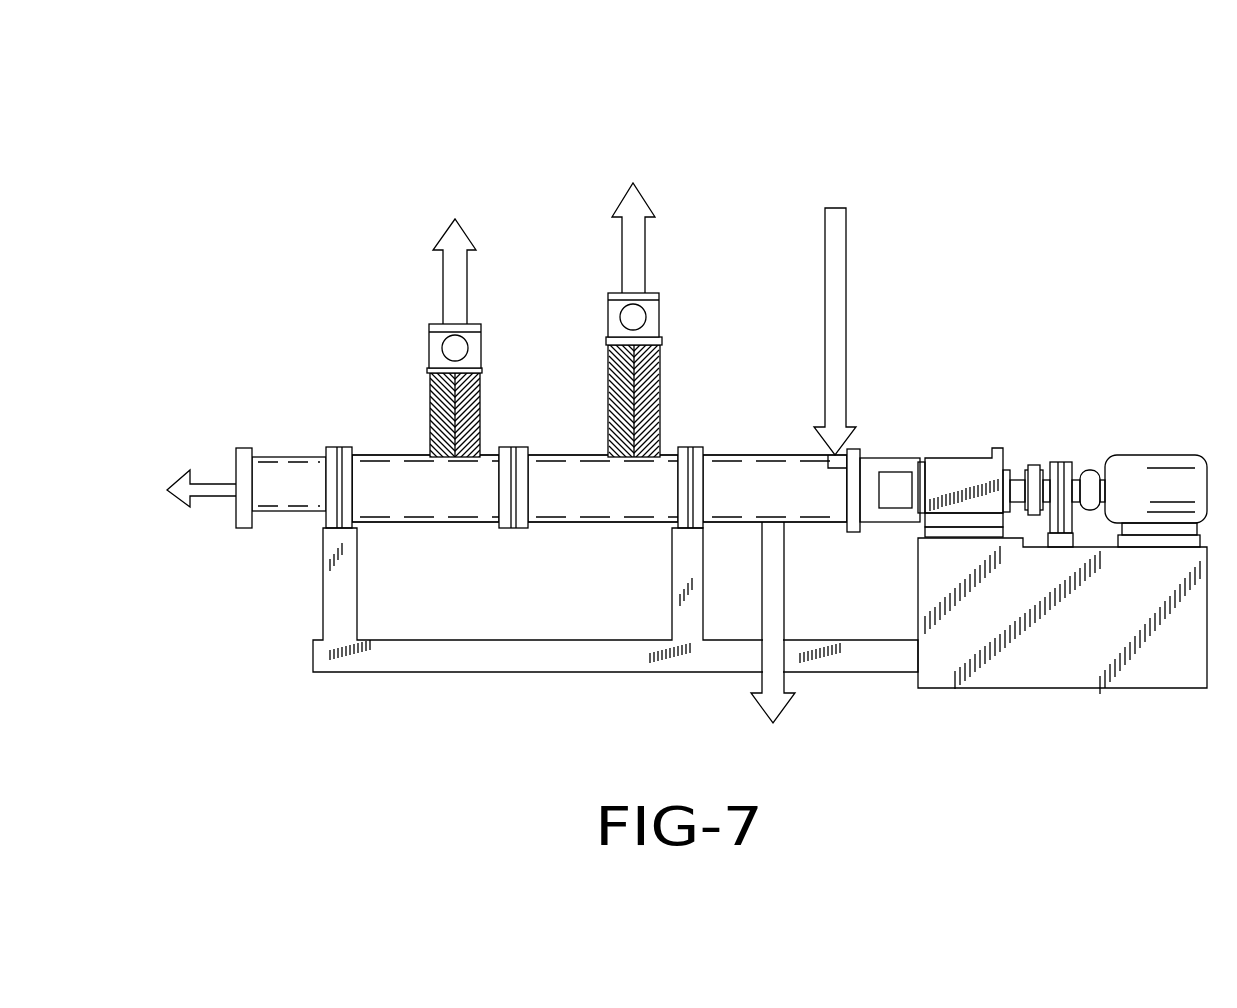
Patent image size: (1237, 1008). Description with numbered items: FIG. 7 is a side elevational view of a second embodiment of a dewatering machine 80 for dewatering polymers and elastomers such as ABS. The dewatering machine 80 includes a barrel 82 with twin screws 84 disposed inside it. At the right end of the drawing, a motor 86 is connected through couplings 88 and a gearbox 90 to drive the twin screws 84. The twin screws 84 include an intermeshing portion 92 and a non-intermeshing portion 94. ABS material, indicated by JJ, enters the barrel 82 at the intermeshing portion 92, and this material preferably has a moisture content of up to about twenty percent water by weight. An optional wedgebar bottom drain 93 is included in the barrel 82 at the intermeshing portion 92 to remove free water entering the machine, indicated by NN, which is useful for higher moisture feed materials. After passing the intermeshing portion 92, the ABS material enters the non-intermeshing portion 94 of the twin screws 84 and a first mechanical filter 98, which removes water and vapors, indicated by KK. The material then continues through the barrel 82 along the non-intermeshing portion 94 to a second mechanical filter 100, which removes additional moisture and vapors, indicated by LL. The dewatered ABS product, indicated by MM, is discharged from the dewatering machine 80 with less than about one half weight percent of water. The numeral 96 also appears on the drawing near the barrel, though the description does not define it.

The dewatering machine 80 is at (665, 420).
The barrel 82 is at (640, 523).
The twin screws 84 is at (237, 505).
The motor 86 is at (1158, 455).
The couplings 88 is at (1030, 465).
The gearbox 90 is at (958, 458).
The intermeshing portion 92 is at (745, 497).
The wedgebar bottom drain 93 is at (750, 523).
The non-intermeshing portion 94 is at (425, 497).
The barrel 96 is at (597, 457).
The first mechanical filter 98 is at (660, 322).
The second mechanical filter 100 is at (430, 347).